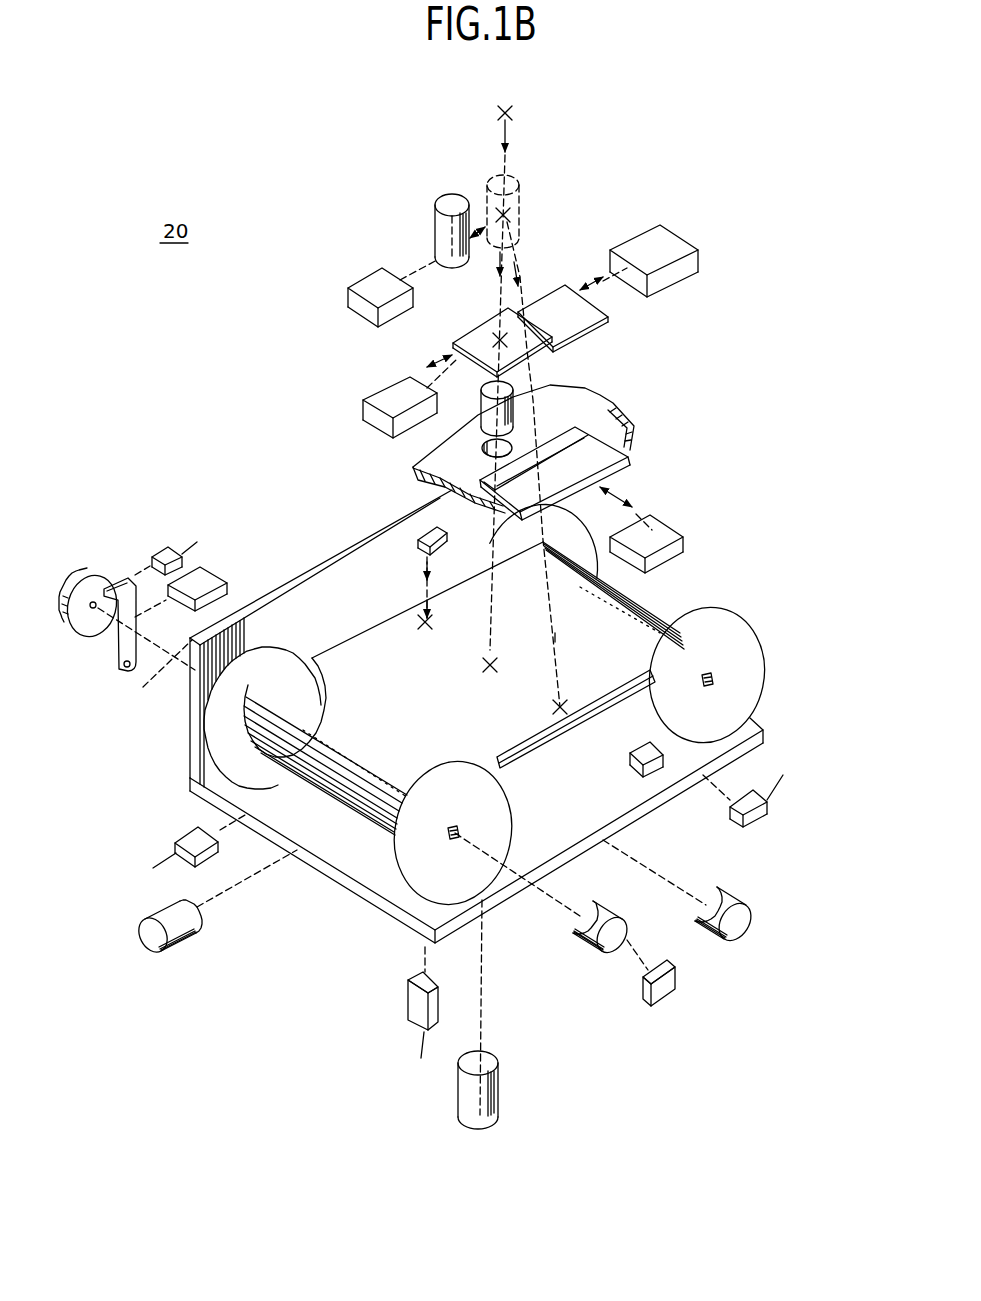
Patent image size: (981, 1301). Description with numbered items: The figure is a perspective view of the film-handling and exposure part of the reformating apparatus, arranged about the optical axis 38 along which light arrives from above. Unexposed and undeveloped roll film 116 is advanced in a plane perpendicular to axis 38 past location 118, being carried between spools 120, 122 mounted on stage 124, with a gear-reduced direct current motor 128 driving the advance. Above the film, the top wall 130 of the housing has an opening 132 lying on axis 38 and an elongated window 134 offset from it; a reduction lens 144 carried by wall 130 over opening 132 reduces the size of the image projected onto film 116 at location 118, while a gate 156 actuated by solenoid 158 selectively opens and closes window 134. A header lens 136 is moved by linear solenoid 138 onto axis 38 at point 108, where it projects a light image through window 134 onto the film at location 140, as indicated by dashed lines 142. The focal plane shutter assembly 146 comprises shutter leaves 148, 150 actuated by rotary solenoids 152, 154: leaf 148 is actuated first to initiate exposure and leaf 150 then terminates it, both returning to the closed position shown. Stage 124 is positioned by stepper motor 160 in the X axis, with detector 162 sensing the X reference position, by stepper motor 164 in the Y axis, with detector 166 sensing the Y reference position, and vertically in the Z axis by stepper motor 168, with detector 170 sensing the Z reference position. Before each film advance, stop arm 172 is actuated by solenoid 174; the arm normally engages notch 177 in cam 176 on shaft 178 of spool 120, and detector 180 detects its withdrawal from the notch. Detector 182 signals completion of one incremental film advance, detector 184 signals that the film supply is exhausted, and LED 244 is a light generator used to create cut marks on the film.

The axis 38 is at (505, 133).
The point 108 is at (513, 215).
The roll film 116 is at (622, 615).
The location 118 is at (487, 675).
The spool 120 is at (505, 806).
The spool 122 is at (758, 664).
The stage 124 is at (362, 886).
The gear-reduced direct current motor 128 is at (578, 935).
The top wall 130 is at (605, 408).
The opening 132 is at (484, 448).
The elongated window 134 is at (548, 445).
The header lens 136 is at (436, 228).
The linear solenoid 138 is at (372, 288).
The location 140 is at (556, 707).
The dashed lines 142 is at (556, 638).
The reduction lens 144 is at (488, 413).
The focal plane shutter assembly 146 is at (654, 332).
The shutter leaf 148 is at (470, 338).
The shutter leaf 150 is at (548, 300).
The rotary solenoid 152 is at (388, 393).
The rotary solenoid 154 is at (680, 243).
The gate 156 is at (632, 446).
The solenoid 158 is at (662, 530).
The stepper motor 160 is at (178, 945).
The detector 162 is at (192, 838).
The stepper motor 164 is at (725, 903).
The detector 166 is at (770, 808).
The stepper motor 168 is at (498, 1093).
The detector 170 is at (407, 1002).
The stop arm 172 is at (125, 648).
The solenoid 174 is at (207, 580).
The cam 176 is at (80, 625).
The notch 177 is at (114, 585).
The shaft 178 is at (155, 681).
The detector 180 is at (163, 548).
The detector 182 is at (656, 1003).
The detector 184 is at (633, 760).
The LED 244 is at (415, 546).